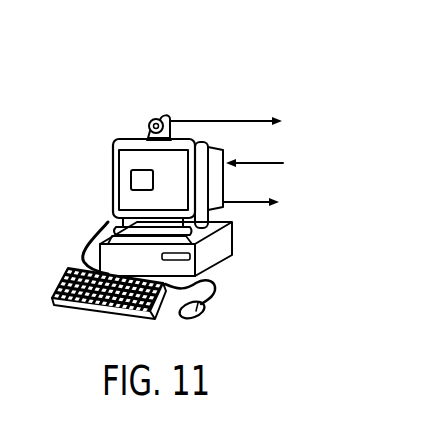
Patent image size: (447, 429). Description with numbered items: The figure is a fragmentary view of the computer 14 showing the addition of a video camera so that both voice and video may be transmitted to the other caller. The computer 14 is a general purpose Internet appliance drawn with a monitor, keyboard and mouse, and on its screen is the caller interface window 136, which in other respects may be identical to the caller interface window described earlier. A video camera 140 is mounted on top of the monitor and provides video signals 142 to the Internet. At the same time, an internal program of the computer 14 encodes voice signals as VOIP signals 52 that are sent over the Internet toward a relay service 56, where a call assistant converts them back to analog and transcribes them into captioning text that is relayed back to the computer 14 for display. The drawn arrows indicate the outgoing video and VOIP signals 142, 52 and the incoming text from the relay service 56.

The computer 14 is at (94, 131).
The video camera 140 is at (156, 117).
The caller interface window 136 is at (136, 180).
The video signals 142 is at (278, 118).
The relay service 56 is at (283, 163).
The VOIP signals 52 is at (281, 205).